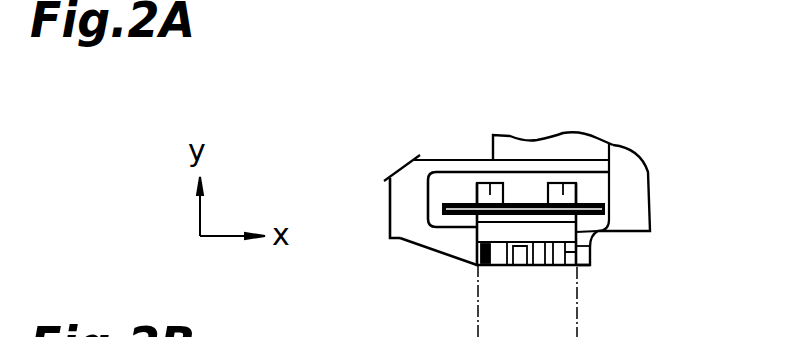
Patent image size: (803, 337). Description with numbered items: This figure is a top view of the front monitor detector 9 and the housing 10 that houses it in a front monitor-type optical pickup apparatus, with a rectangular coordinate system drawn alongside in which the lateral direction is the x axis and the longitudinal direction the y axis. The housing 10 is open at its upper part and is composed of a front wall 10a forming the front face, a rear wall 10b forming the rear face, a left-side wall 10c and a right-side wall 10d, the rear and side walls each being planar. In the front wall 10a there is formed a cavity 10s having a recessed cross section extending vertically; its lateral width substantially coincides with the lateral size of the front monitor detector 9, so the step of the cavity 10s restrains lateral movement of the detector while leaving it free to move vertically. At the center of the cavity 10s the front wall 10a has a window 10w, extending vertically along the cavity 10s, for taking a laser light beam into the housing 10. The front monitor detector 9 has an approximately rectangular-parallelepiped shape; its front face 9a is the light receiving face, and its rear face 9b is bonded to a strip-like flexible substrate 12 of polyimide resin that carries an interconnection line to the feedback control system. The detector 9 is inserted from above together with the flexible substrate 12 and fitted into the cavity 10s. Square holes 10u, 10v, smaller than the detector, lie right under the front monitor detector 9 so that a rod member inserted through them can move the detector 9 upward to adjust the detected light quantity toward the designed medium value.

The housing 10 is at (410, 192).
The front wall 10a is at (480, 265).
The rear wall 10b is at (542, 203).
The left-side wall 10c is at (408, 218).
The right-side wall 10d is at (632, 208).
The cavity 10s is at (455, 240).
The square hole 10u is at (477, 183).
The square hole 10v is at (577, 183).
The window 10w is at (522, 250).
The front monitor detector 9 is at (538, 203).
The front face 9a is at (533, 265).
The rear face 9b is at (516, 203).
The flexible substrate 12 is at (586, 205).